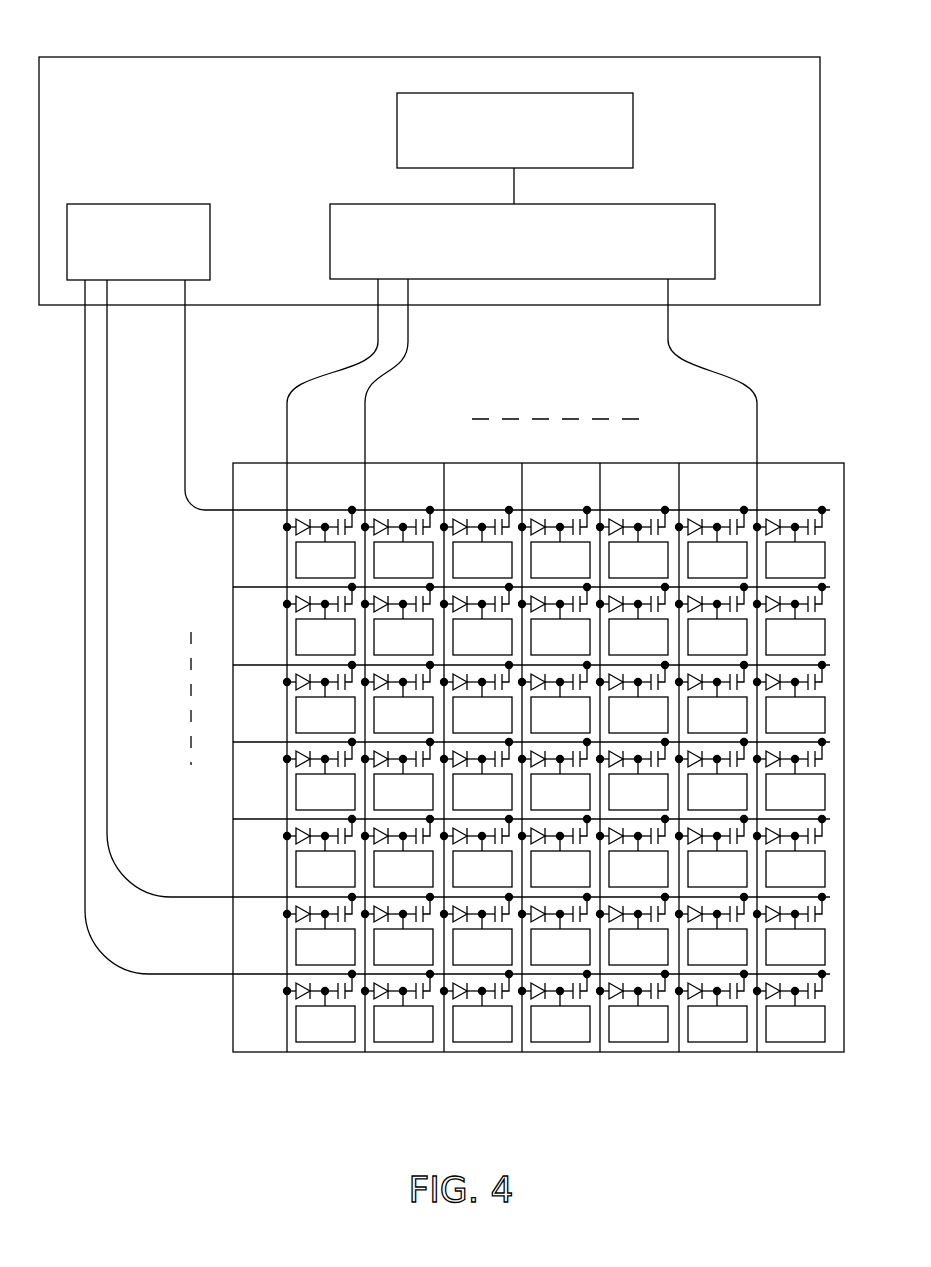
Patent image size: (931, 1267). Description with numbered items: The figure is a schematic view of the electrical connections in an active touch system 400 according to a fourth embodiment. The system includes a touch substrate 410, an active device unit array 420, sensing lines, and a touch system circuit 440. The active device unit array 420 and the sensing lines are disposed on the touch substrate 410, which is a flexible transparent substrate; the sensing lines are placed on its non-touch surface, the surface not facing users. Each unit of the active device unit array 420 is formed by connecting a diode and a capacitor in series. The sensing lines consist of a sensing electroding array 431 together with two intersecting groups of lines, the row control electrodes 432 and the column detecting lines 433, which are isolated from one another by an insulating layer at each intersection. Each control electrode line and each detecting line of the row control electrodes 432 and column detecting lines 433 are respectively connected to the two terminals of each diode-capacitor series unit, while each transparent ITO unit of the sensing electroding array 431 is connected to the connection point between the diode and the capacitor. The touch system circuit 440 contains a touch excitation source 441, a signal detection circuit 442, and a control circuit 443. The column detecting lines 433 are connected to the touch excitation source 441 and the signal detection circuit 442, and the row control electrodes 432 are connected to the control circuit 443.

The active touch system 400 is at (441, 560).
The touch system circuit 440 is at (429, 181).
The touch excitation source 441 is at (515, 130).
The signal detection circuit 442 is at (522, 223).
The control circuit 443 is at (138, 242).
The column detecting lines 433 is at (556, 401).
The row control electrodes 432 is at (160, 698).
The sensing electroding array 431 is at (324, 1041).
The active device unit array 420 is at (295, 996).
The touch substrate 410 is at (233, 1053).